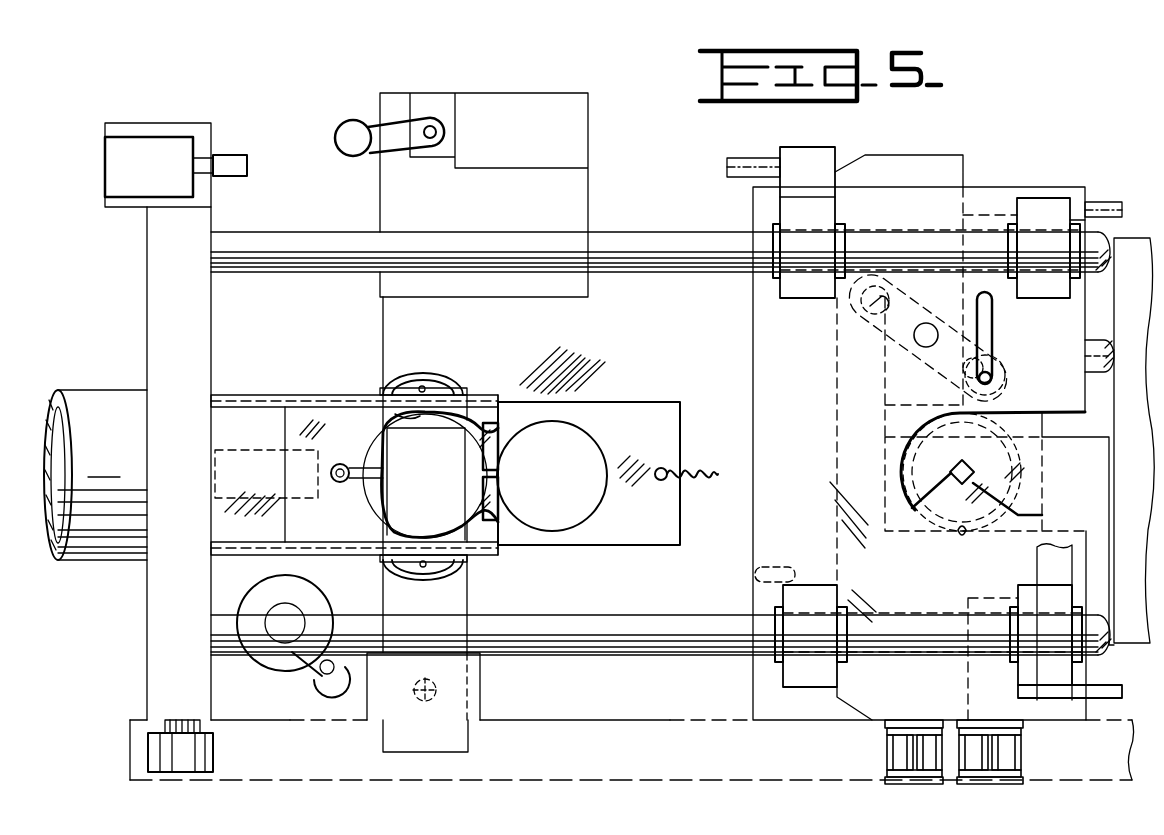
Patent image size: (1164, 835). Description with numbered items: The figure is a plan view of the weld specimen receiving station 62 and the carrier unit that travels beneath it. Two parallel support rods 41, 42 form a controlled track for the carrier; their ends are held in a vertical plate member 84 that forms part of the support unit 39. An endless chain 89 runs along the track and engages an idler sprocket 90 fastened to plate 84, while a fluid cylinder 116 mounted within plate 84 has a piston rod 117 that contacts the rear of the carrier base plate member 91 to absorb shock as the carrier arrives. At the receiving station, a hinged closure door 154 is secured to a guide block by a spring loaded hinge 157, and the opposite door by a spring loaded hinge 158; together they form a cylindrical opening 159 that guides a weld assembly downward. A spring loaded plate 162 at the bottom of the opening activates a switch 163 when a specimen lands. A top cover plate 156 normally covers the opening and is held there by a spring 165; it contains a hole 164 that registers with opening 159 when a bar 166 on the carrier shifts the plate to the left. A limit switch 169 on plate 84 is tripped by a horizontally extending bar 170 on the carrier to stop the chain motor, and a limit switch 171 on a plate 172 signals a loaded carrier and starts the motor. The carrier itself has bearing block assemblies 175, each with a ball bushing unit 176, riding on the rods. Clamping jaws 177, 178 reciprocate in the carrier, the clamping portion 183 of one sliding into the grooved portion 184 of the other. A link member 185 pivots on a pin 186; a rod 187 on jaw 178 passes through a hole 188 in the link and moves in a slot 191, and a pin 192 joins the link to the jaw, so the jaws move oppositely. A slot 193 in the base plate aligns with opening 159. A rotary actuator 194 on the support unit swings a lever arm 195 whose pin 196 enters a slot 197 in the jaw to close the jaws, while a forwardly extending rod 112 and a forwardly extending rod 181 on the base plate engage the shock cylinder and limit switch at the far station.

The support unit 39 is at (608, 344).
The parallel support rod 41 is at (658, 241).
The parallel support rod 42 is at (663, 640).
The weld specimen receiving station 62 is at (358, 348).
The vertical plate member 84 is at (193, 594).
The endless chain 89 is at (585, 690).
The idler sprocket 90 is at (190, 752).
The base plate member 91 is at (753, 368).
The forwardly extending rod 112 is at (1122, 366).
The fluid cylinder 116 is at (126, 365).
The piston rod 117 is at (218, 458).
The hinged closure door 154 is at (498, 457).
The top cover plate 156 is at (668, 432).
The spring loaded hinge 157 is at (445, 386).
The spring loaded hinge 158 is at (445, 568).
The cylindrical opening 159 is at (350, 440).
The spring loaded plate 162 is at (440, 460).
The switch 163 is at (438, 692).
The hole 164 is at (594, 498).
The spring 165 is at (700, 466).
The bar 166 is at (1045, 558).
The limit switch 169 is at (168, 145).
The horizontally extending bar 170 is at (748, 165).
The limit switch 171 is at (497, 107).
The plate 172 is at (588, 212).
The bearing block assembly 175 is at (813, 293).
The ball bushing unit 176 is at (775, 228).
The clamping jaw 177 is at (915, 165).
The clamping jaw 178 is at (976, 210).
The forwardly extending rod 181 is at (1101, 202).
The clamping portion 183 is at (931, 456).
The grooved portion 184 is at (1030, 483).
The link member 185 is at (905, 302).
The pin 186 is at (921, 347).
The rod 187 is at (988, 362).
The hole 188 is at (990, 384).
The slot 191 is at (985, 320).
The pin 192 is at (876, 320).
The slot 193 is at (960, 534).
The rotary actuator 194 is at (312, 600).
The lever arm 195 is at (310, 681).
The pin 196 is at (319, 681).
The slot 197 is at (757, 575).